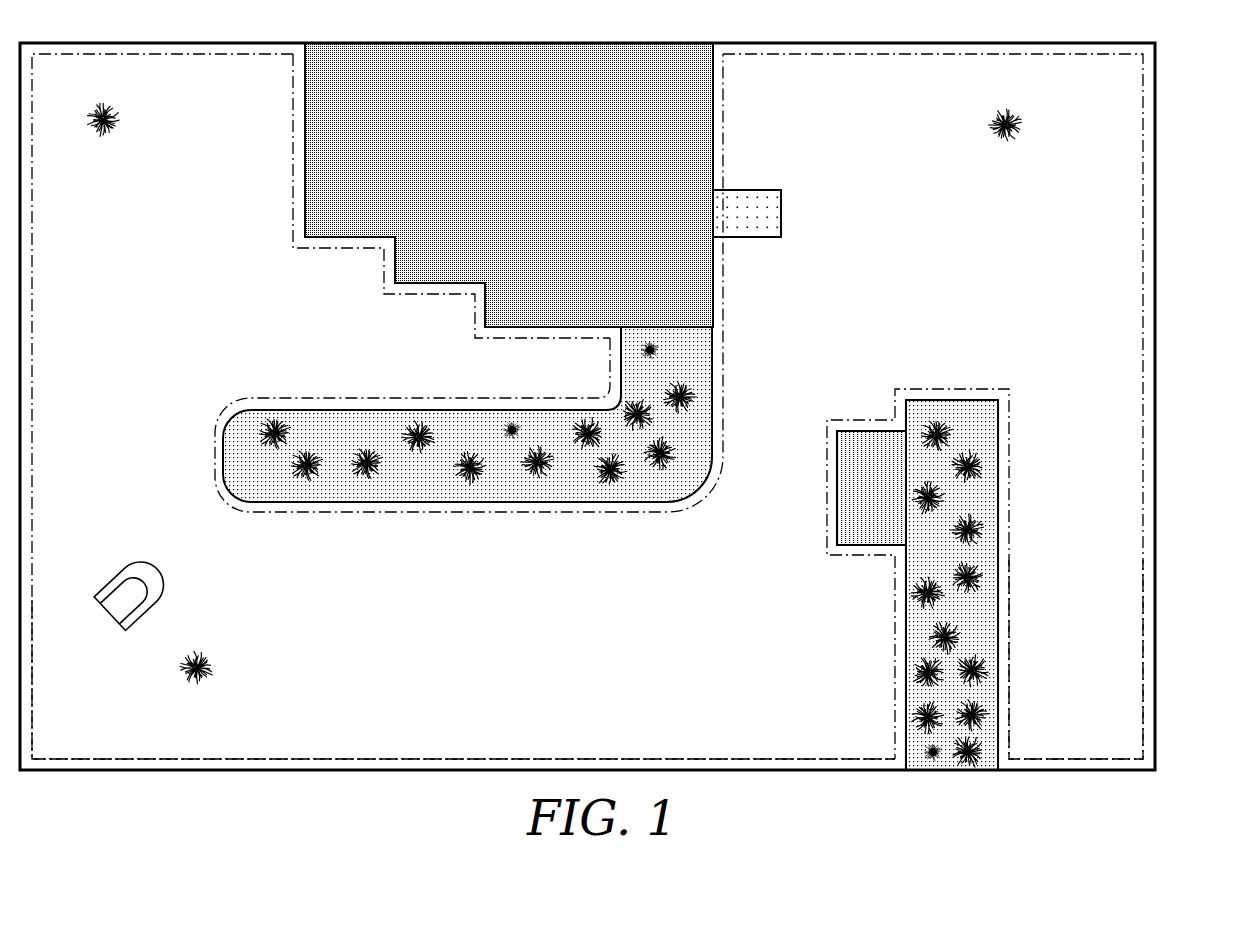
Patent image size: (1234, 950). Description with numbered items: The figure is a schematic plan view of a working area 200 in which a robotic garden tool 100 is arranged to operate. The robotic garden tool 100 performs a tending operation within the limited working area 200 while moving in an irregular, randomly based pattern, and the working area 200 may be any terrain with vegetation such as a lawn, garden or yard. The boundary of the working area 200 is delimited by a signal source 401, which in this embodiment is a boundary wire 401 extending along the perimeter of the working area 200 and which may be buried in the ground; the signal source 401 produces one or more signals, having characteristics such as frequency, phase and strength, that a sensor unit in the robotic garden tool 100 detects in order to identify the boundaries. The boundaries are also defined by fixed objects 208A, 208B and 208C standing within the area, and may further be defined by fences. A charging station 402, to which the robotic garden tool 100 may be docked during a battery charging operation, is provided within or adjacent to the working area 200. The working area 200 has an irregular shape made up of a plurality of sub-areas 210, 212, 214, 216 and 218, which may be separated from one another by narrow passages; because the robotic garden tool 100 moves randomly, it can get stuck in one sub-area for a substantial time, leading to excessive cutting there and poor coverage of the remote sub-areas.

The robotic garden tool 100 is at (145, 565).
The working area 200 is at (1170, 54).
The fixed object 208A is at (199, 655).
The fixed object 208B is at (107, 107).
The fixed object 208C is at (1003, 107).
The sub-area 210 is at (933, 406).
The sub-area 212 is at (1076, 659).
The sub-area 214 is at (463, 679).
The sub-area 216 is at (463, 406).
The sub-area 218 is at (469, 283).
The signal source 401 is at (725, 382).
The charging station 402 is at (757, 190).